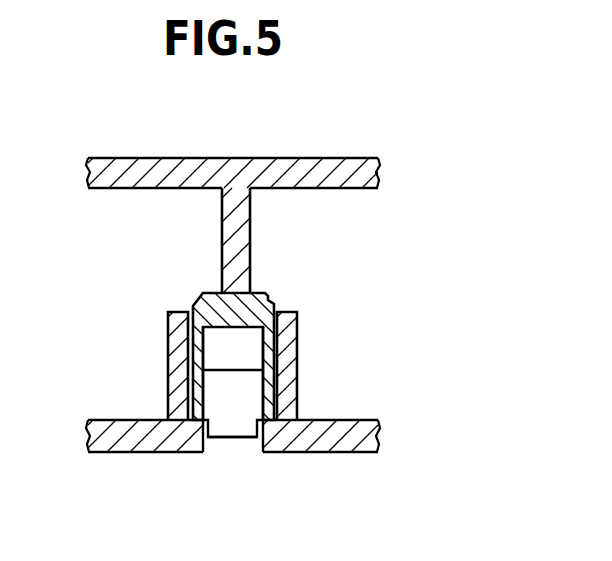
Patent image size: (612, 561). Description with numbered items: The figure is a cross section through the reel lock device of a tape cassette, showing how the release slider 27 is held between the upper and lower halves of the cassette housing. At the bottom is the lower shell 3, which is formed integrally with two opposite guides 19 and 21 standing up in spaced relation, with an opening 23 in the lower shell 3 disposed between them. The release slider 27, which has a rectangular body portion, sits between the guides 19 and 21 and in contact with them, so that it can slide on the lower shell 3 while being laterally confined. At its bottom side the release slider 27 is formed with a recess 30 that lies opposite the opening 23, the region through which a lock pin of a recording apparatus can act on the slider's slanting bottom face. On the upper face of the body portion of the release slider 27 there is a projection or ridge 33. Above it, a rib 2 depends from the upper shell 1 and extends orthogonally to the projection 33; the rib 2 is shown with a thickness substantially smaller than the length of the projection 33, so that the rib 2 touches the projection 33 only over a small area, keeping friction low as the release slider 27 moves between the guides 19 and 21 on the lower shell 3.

The upper shell 1 is at (318, 158).
The rib 2 is at (222, 242).
The lower shell 3 is at (125, 453).
The guide 19 is at (168, 373).
The guide 21 is at (297, 346).
The opening 23 is at (236, 440).
The release slider 27 is at (268, 308).
The recess 30 is at (243, 343).
The projection 33 is at (264, 292).